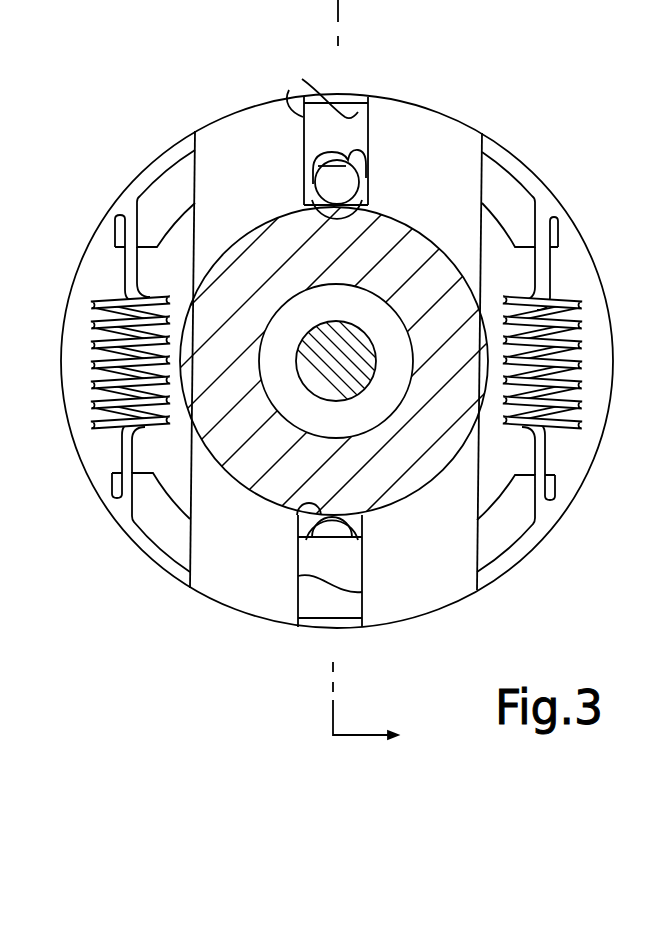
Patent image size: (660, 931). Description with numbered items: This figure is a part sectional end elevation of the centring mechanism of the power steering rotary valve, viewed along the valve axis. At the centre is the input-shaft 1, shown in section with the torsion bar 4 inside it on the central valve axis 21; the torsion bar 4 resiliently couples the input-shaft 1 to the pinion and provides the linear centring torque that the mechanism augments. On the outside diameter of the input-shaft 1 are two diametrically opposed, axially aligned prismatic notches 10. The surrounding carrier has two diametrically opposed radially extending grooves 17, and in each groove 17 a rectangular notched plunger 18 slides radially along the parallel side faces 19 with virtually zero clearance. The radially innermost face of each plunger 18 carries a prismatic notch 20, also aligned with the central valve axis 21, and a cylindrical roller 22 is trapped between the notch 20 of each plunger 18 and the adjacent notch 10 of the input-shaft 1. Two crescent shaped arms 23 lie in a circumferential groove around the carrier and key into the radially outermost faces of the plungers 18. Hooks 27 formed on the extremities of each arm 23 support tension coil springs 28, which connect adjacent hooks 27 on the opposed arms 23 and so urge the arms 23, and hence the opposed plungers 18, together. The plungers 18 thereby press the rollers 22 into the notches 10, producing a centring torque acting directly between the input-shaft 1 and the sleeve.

The input-shaft 1 is at (418, 468).
The torsion bar 4 is at (360, 392).
The prismatic notches 10 is at (380, 215).
The radially extending grooves 17 is at (353, 103).
The rectangular notched plunger 18 is at (357, 133).
The parallel side faces 19 is at (385, 588).
The prismatic notches 20 is at (369, 151).
The central valve axis 21 is at (338, 358).
The cylindrical rollers 22 is at (322, 179).
The crescent shaped arms 23 is at (168, 180).
The hooks 27 is at (120, 218).
The tension coil springs 28 is at (125, 303).